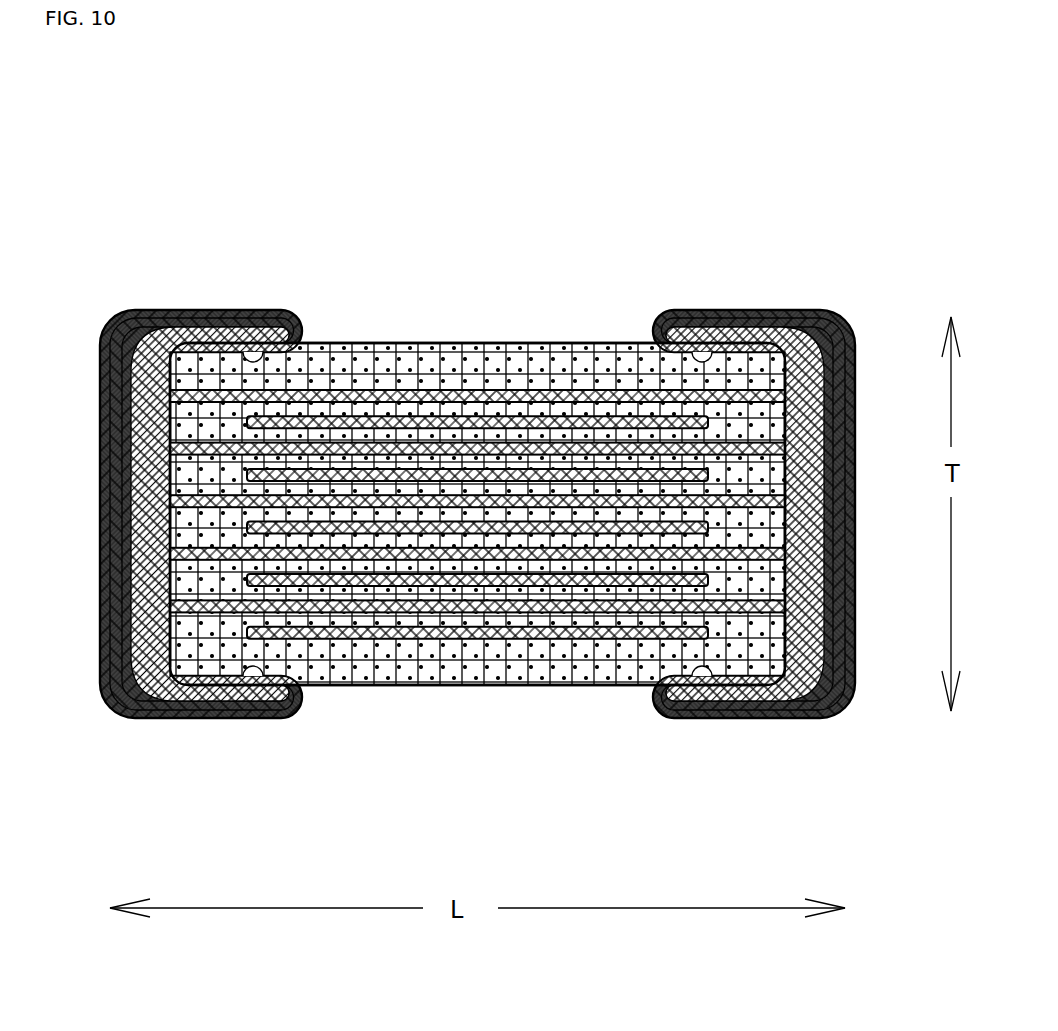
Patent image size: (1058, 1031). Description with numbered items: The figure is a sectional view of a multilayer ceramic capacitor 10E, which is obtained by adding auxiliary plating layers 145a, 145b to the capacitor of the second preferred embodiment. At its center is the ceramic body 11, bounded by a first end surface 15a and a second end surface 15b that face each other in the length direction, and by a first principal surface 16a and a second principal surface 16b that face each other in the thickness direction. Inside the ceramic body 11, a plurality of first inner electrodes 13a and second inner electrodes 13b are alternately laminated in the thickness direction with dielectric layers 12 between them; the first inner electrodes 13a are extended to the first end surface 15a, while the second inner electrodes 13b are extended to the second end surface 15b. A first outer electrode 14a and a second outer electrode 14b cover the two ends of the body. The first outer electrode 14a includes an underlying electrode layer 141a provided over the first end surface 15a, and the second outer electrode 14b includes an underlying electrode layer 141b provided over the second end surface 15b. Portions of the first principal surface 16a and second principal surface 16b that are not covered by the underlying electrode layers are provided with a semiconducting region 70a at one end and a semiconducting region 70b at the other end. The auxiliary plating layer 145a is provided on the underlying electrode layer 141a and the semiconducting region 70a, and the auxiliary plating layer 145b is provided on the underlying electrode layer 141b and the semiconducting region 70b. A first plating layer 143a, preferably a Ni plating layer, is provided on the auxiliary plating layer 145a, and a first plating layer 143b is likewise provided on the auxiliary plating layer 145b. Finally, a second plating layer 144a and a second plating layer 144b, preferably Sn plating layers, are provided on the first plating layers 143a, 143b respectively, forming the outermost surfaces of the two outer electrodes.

The multilayer ceramic capacitor 10E is at (380, 150).
The ceramic body 11 is at (462, 343).
The dielectric layers 12 is at (385, 438).
The first inner electrodes 13a is at (595, 440).
The second inner electrodes 13b is at (503, 587).
The first outer electrode 14a is at (278, 183).
The second outer electrode 14b is at (843, 183).
The underlying electrode layer 141a is at (163, 319).
The underlying electrode layer 141b is at (798, 320).
The first plating layer 143a is at (212, 312).
The first plating layer 143b is at (719, 312).
The second plating layer 144a is at (128, 310).
The second plating layer 144b is at (764, 310).
The auxiliary plating layer 145a is at (253, 320).
The auxiliary plating layer 145b is at (687, 310).
The first end surface 15a is at (168, 525).
The second end surface 15b is at (788, 522).
The first principal surface 16a is at (407, 343).
The second principal surface 16b is at (380, 685).
The semiconducting region 70a is at (272, 343).
The semiconducting region 70b is at (648, 343).